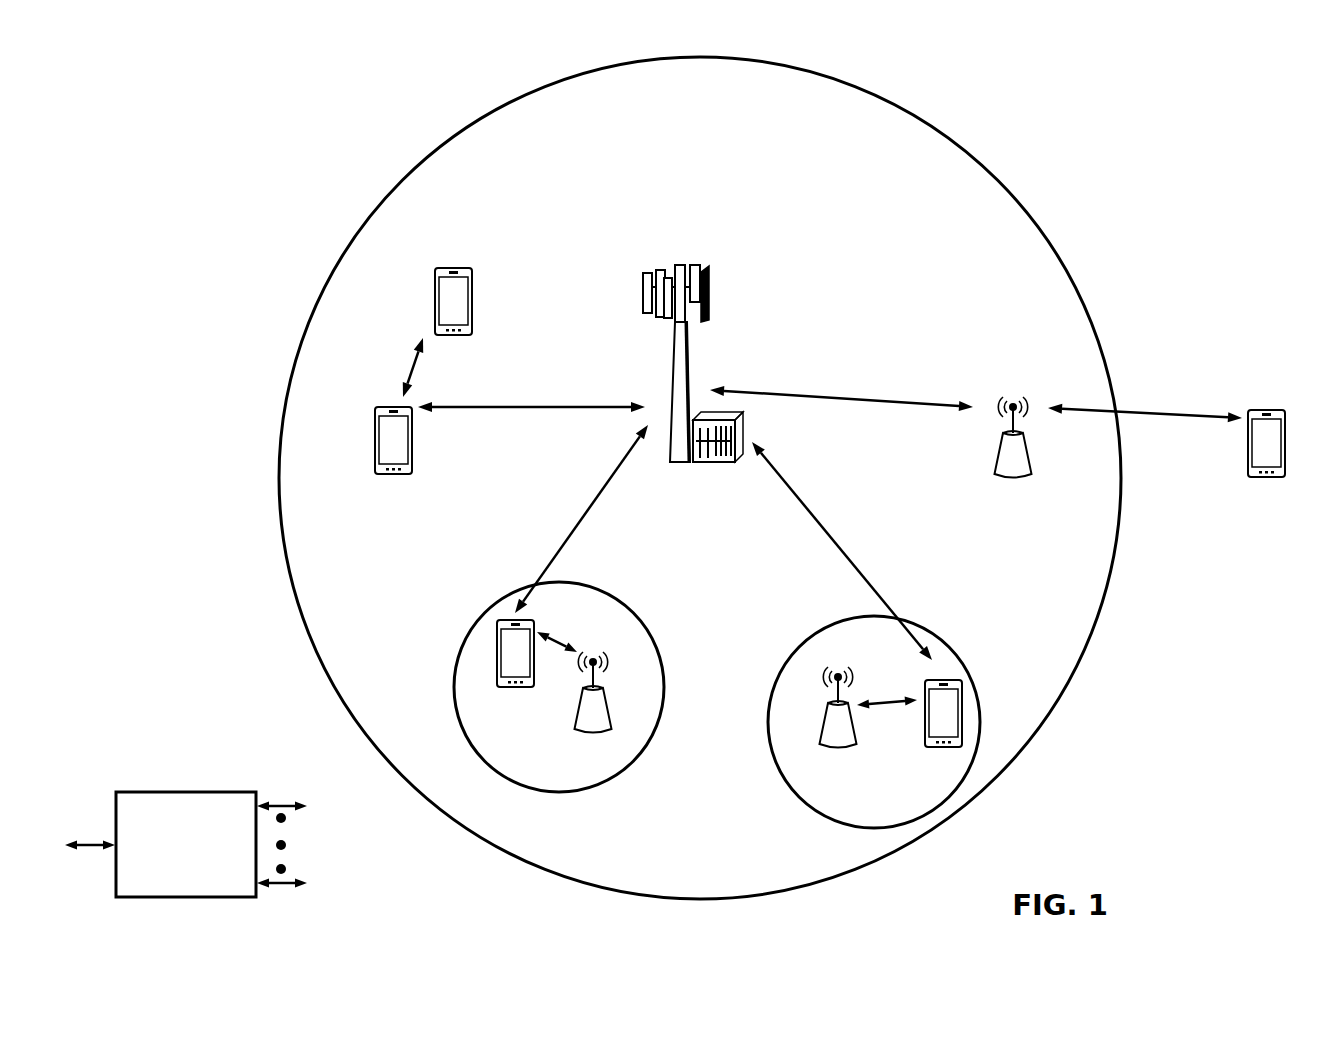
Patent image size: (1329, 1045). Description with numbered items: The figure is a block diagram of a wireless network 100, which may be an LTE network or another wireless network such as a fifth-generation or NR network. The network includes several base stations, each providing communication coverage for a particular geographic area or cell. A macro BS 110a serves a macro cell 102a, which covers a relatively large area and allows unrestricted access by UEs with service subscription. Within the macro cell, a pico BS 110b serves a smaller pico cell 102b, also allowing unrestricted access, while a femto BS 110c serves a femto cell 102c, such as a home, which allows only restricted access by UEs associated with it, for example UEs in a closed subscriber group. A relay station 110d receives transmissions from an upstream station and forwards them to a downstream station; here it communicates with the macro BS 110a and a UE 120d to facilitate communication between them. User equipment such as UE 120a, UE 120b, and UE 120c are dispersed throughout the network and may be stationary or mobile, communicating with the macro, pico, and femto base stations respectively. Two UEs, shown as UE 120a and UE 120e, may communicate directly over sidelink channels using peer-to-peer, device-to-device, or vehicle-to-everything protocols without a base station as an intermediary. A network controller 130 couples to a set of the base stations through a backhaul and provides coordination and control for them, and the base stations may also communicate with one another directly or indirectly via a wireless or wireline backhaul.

The wireless network 100 is at (162, 47).
The macro cell 102a is at (978, 165).
The pico cell 102b is at (648, 622).
The femto cell 102c is at (812, 635).
The macro BS 110a is at (688, 258).
The pico BS 110b is at (615, 717).
The femto BS 110c is at (825, 733).
The relay station 110d is at (1013, 395).
The UE 120a is at (375, 435).
The UE 120b is at (502, 688).
The UE 120c is at (930, 748).
The UE 120d is at (1277, 410).
The UE 120e is at (435, 290).
The network controller 130 is at (185, 790).